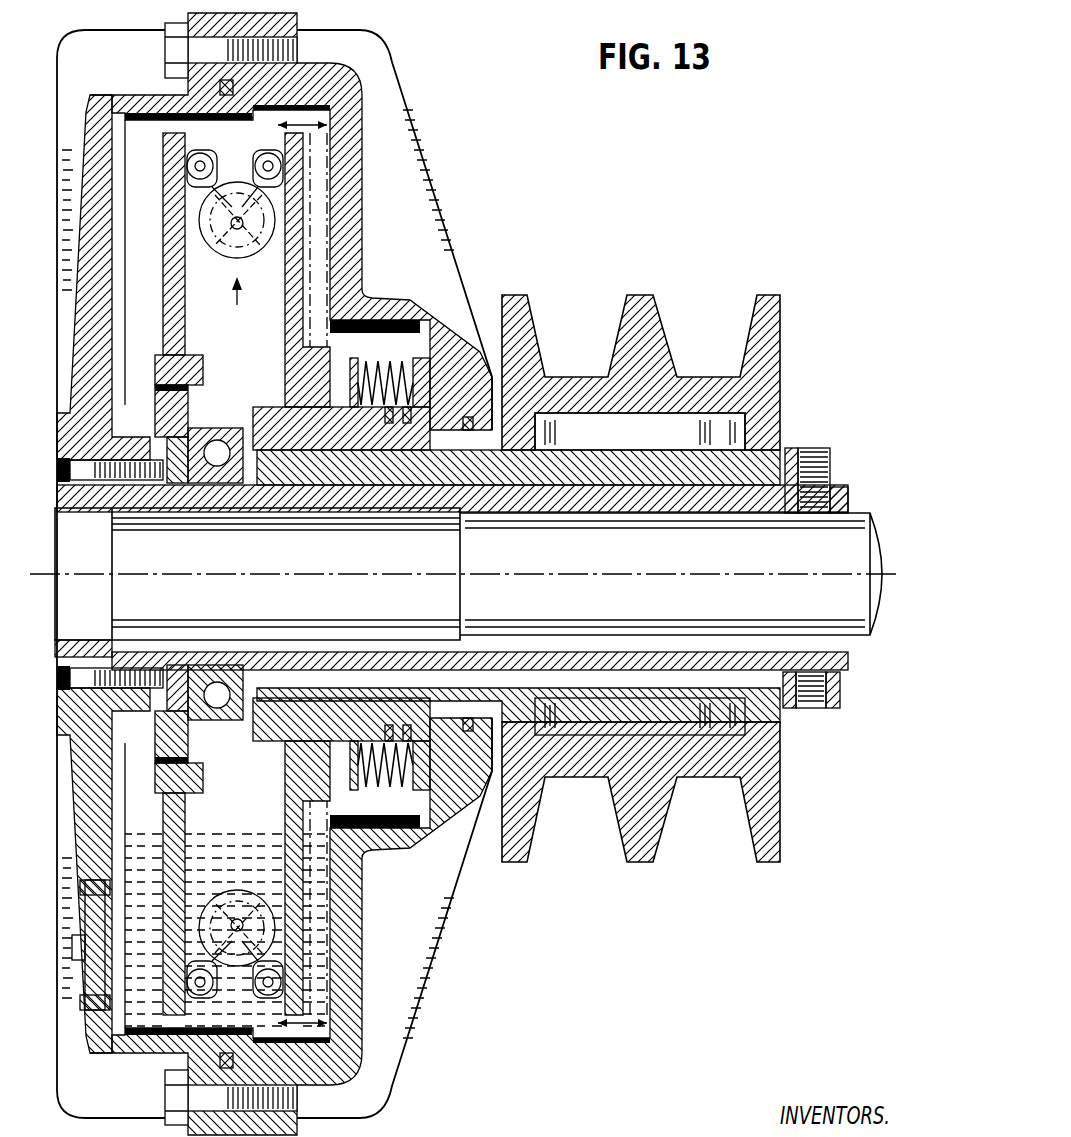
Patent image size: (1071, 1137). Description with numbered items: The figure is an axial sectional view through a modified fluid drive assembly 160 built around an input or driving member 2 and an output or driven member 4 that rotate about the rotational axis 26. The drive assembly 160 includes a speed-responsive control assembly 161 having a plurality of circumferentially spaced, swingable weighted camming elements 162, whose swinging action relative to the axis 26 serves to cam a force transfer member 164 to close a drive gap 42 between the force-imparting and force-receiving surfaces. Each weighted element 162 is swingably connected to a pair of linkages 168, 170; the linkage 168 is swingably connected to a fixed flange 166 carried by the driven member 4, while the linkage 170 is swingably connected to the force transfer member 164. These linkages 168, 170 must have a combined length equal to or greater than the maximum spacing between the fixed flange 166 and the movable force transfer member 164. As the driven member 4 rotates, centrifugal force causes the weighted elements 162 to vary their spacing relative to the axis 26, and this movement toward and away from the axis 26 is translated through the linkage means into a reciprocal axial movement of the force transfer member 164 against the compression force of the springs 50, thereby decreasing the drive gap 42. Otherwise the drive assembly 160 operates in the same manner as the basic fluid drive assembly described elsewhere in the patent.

The drive assembly 160 is at (450, 140).
The fixed flange 166 is at (163, 287).
The linkage 168 is at (218, 193).
The linkage 170 is at (251, 193).
The weighted camming element 162 is at (222, 247).
The speed-responsive control assembly 161 is at (237, 306).
The force transfer member 164 is at (288, 248).
The drive gap 42 is at (320, 147).
The springs 50 is at (393, 360).
The driven member 4 is at (782, 442).
The driving member 2 is at (712, 510).
The rotational axis 26 is at (270, 586).